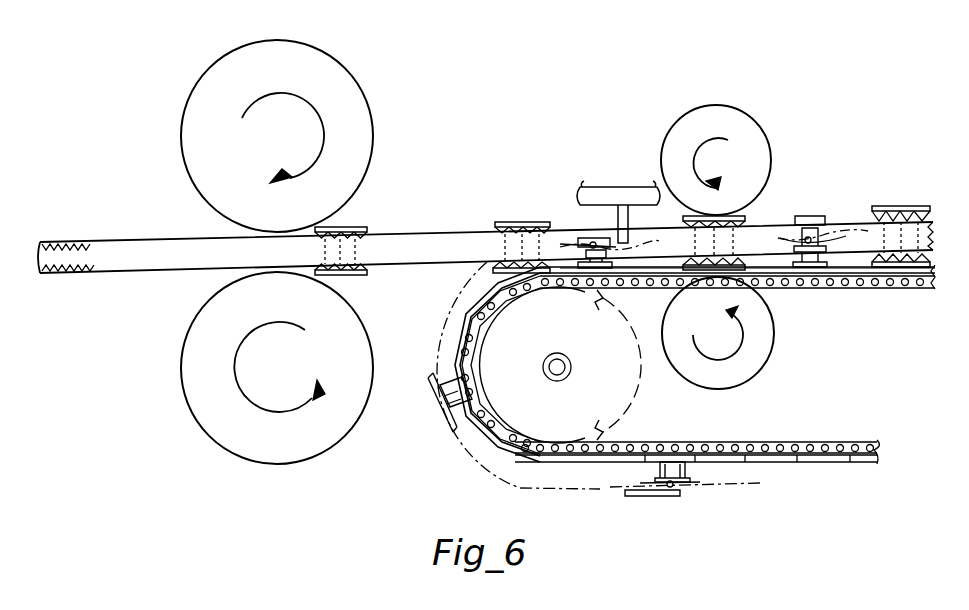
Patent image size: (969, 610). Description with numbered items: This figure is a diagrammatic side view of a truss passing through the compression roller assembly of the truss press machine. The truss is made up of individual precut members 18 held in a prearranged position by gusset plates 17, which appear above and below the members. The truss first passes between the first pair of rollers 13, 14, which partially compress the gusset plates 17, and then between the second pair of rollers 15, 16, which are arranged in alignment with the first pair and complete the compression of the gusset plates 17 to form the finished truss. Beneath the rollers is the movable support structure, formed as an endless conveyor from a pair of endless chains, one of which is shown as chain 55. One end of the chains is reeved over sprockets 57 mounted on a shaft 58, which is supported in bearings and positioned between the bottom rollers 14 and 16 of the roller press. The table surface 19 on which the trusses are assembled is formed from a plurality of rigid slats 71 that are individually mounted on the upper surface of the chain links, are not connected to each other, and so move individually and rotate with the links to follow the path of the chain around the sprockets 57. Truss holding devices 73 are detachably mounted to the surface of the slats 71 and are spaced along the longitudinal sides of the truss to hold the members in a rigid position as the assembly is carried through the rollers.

The roller 13 is at (762, 142).
The roller 14 is at (748, 360).
The roller 15 is at (355, 103).
The roller 16 is at (222, 437).
The gusset plate 17 is at (530, 224).
The precut member 18 is at (435, 243).
The table surface 19 is at (490, 435).
The endless chain 55 is at (905, 287).
The sprocket 57 is at (612, 400).
The shaft 58 is at (560, 367).
The rigid slat 71 is at (816, 286).
The holding device 73 is at (815, 215).